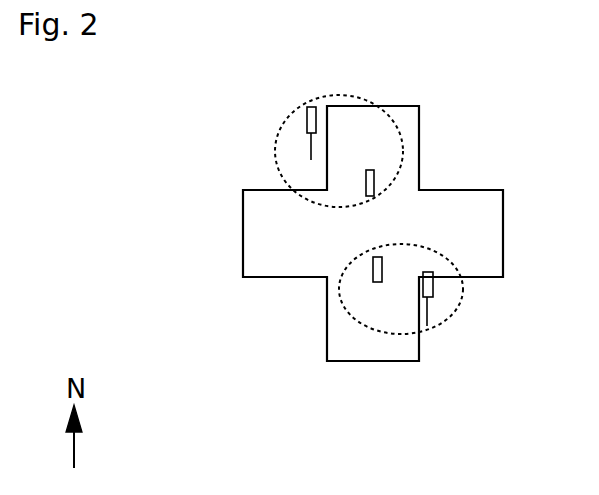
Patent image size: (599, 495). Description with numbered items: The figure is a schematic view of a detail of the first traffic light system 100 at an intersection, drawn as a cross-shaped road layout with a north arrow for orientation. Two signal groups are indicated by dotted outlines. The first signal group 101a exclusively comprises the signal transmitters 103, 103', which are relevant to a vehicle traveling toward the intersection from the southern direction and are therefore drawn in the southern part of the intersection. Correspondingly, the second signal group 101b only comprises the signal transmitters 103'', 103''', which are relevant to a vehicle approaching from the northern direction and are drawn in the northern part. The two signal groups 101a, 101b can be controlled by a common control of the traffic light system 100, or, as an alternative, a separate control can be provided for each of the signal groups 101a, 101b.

The first traffic light system 100 is at (374, 365).
The first signal group 101a is at (469, 290).
The second signal group 101b is at (342, 94).
The signal transmitter 103 is at (484, 321).
The signal transmitter 103' is at (325, 318).
The signal transmitter 103'' is at (255, 214).
The signal transmitter 103''' is at (223, 145).